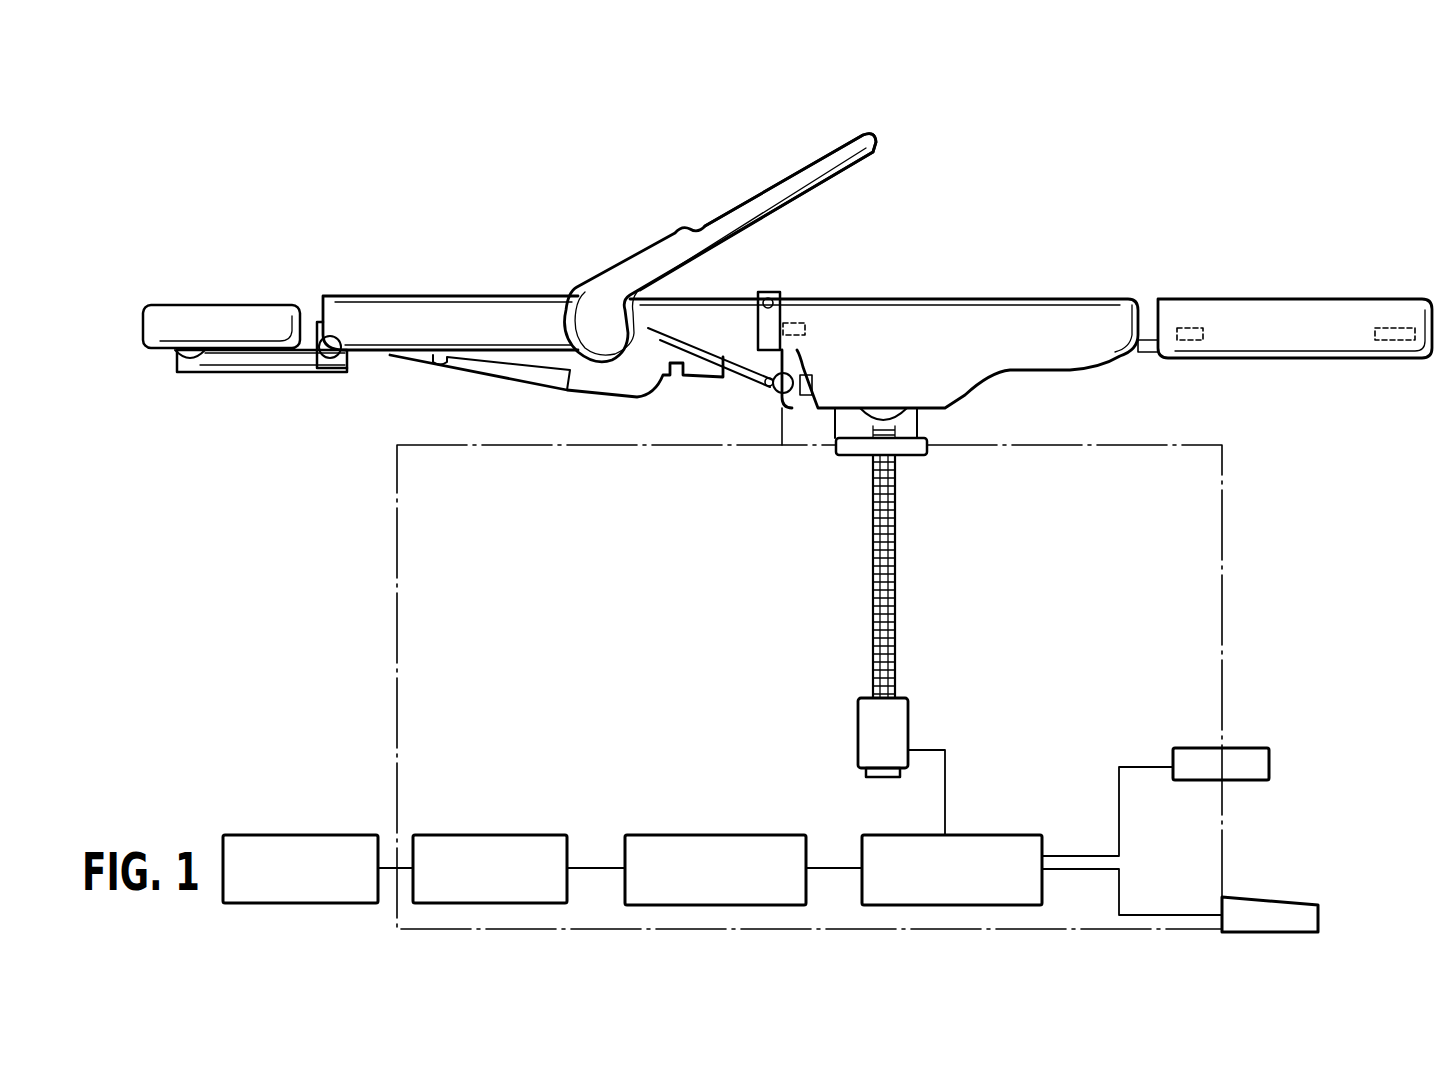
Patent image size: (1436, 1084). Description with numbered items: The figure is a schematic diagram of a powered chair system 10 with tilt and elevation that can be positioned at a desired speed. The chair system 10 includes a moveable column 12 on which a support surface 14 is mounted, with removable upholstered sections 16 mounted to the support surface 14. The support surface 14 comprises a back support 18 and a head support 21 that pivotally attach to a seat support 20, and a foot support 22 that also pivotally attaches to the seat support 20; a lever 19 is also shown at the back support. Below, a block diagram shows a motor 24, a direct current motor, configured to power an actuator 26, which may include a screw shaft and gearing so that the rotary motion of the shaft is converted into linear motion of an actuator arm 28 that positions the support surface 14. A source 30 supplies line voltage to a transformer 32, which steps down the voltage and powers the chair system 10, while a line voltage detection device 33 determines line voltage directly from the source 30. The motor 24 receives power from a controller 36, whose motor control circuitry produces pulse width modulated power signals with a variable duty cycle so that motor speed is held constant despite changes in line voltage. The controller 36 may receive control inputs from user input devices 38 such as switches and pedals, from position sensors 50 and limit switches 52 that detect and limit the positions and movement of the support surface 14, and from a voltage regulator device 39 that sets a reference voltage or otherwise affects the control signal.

The chair system 10 is at (297, 110).
The moveable column 12 is at (1222, 620).
The support surface 14 is at (347, 296).
The upholstered sections 16 is at (556, 298).
The back support 18 is at (458, 303).
The lever 19 is at (645, 252).
The seat support 20 is at (818, 299).
The head support 21 is at (222, 306).
The foot support 22 is at (1308, 299).
The motor 24 is at (893, 728).
The actuator 26 is at (957, 545).
The actuator arm 28 is at (938, 408).
The source 30 is at (288, 834).
The transformer 32 is at (732, 835).
The line voltage detection device 33 is at (490, 835).
The controller 36 is at (875, 835).
The user input devices 38 is at (845, 150).
The voltage regulator device 39 is at (1232, 748).
The position sensors 50 is at (805, 328).
The limit switches 52 is at (1397, 343).